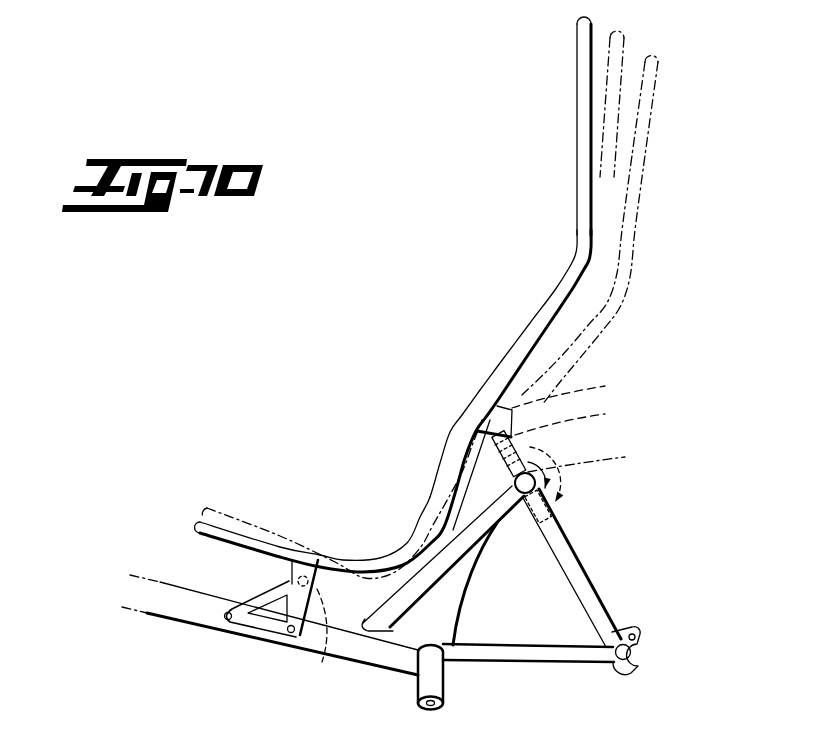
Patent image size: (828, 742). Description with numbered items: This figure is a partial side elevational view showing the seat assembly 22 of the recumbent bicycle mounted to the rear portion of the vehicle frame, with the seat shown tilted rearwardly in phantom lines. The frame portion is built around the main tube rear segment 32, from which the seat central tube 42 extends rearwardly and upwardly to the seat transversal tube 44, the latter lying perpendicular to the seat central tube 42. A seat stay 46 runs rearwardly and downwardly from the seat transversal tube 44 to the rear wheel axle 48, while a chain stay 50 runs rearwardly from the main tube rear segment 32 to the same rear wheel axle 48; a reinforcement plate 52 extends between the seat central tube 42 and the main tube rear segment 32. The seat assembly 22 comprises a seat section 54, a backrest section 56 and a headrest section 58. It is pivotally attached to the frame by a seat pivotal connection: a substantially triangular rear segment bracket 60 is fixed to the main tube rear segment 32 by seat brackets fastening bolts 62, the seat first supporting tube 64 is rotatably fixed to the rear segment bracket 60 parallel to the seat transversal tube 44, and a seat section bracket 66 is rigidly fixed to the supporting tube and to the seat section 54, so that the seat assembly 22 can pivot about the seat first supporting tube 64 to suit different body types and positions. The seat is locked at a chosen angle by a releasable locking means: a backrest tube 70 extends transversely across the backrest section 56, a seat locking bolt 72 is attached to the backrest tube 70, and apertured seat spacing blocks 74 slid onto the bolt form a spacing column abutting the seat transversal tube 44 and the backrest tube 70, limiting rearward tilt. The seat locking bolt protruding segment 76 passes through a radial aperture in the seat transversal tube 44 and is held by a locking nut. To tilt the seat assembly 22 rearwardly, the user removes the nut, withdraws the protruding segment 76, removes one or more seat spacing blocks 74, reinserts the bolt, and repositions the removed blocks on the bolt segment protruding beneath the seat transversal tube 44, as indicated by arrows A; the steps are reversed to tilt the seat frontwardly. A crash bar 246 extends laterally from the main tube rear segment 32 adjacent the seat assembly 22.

The seat assembly 22 is at (422, 270).
The main tube rear segment 32 is at (178, 607).
The seat central tube 42 is at (452, 522).
The seat transversal tube 44 is at (514, 482).
The seat stays 46 is at (577, 570).
The rear wheel axle 48 is at (642, 650).
The chain stays 50 is at (550, 652).
The reinforcement plate 52 is at (447, 600).
The seat section 54 is at (344, 510).
The backrest section 56 is at (522, 311).
The headrest section 58 is at (548, 80).
The rear segment brackets 60 is at (263, 600).
The seat brackets fastening bolts 62 is at (289, 633).
The seat first supporting tube 64 is at (312, 626).
The seat section brackets 66 is at (282, 556).
The backrest tube 70 is at (579, 385).
The seat locking bolts 72 is at (578, 416).
The seat spacing blocks 74 is at (505, 455).
The seat locking bolt protruding segments 76 is at (520, 520).
The crash bars 246 is at (418, 686).
The arrows A is at (586, 456).